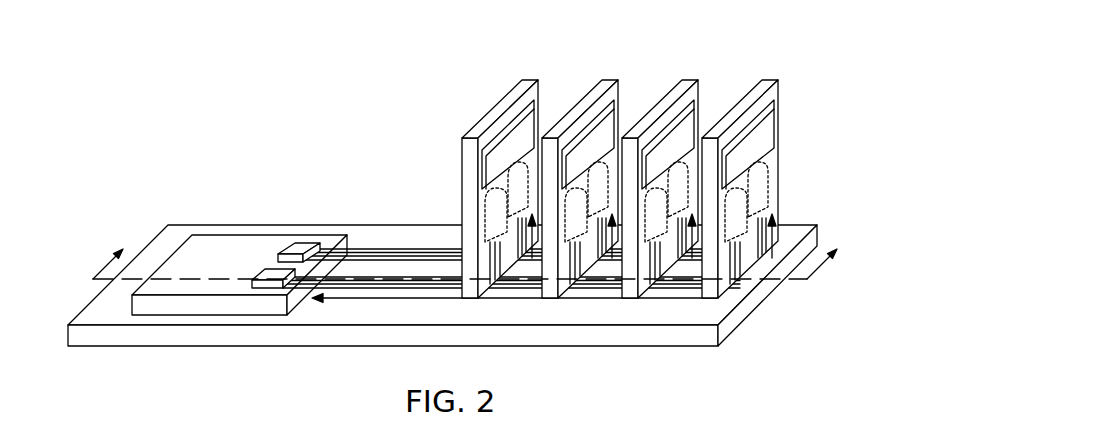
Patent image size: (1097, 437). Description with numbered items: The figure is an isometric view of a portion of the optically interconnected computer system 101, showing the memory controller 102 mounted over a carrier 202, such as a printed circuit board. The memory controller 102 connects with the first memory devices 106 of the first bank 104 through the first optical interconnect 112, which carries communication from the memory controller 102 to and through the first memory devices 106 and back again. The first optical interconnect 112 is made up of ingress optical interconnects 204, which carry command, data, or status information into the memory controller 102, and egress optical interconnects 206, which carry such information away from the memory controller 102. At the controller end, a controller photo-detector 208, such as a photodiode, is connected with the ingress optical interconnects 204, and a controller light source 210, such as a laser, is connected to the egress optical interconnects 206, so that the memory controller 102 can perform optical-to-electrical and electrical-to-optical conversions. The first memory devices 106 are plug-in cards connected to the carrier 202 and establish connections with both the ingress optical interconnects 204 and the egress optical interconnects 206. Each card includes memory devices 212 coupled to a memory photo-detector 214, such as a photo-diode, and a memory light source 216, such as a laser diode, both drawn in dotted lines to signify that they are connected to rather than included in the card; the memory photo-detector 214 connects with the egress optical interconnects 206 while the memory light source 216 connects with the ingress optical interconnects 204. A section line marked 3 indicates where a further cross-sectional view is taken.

The optically interconnected computer system 101 is at (207, 78).
The memory controller 102 is at (223, 274).
The first bank 104 is at (661, 156).
The first memory devices 106 is at (500, 169).
The first optical interconnect 112 is at (511, 264).
The carrier 202 is at (128, 324).
The ingress optical interconnects 204 is at (368, 271).
The egress optical interconnects 206 is at (399, 260).
The controller photo-detector 208 is at (272, 277).
The controller light source 210 is at (302, 248).
The memory devices 212 is at (781, 174).
The memory photo-detector 214 is at (791, 188).
The memory light source 216 is at (788, 224).
The section line 3- 3 is at (463, 268).